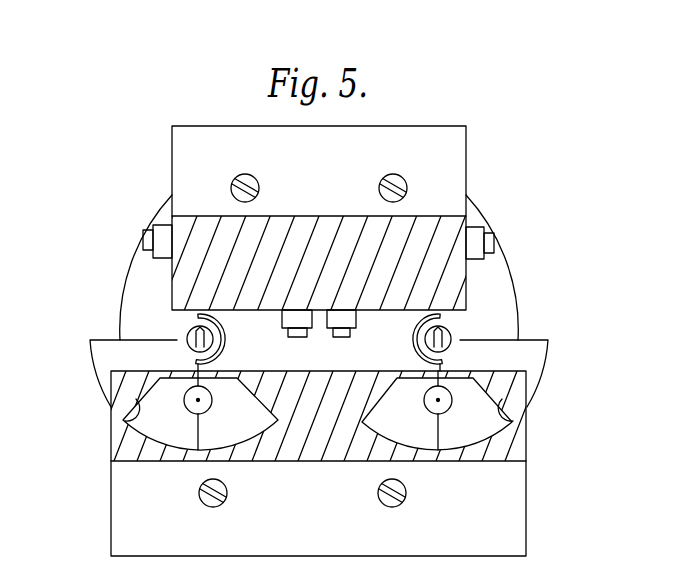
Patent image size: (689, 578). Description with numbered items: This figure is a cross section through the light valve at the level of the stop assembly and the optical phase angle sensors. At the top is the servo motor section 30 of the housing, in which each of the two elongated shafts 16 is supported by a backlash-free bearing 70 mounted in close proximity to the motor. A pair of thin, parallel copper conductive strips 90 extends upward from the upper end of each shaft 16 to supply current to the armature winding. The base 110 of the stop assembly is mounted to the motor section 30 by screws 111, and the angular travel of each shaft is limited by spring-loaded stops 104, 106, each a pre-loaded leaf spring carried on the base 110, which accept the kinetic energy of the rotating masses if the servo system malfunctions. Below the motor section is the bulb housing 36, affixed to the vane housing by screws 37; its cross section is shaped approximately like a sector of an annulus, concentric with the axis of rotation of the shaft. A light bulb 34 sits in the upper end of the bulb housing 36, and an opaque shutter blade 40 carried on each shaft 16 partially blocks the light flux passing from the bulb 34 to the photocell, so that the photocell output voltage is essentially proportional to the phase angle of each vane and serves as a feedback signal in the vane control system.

The servo motor section 30 is at (127, 279).
The base 110 is at (432, 269).
The screws 111 is at (252, 175).
The spring-loaded stop 106 is at (162, 228).
The spring-loaded stop 104 is at (330, 328).
The backlash-free bearing 70 is at (226, 324).
The shaft 16 is at (213, 341).
The conductive strips 90 is at (198, 336).
The shutter blade 40 is at (525, 362).
The bulb housing 36 is at (125, 426).
The light bulb 34 is at (212, 406).
The screws 37 is at (203, 502).